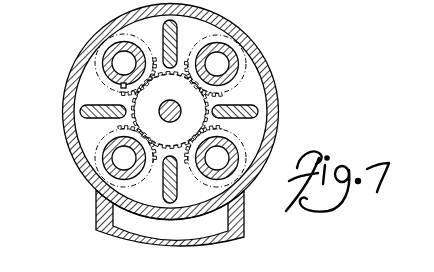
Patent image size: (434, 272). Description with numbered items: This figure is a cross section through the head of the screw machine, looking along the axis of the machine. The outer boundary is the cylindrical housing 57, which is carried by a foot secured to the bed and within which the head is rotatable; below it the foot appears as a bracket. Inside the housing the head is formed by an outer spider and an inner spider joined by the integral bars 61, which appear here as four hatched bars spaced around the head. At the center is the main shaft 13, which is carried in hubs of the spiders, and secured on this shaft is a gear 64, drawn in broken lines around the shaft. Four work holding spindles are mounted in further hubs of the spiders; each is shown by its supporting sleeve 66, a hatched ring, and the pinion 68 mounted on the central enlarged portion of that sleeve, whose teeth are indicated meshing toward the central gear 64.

The main shaft 13 is at (172, 97).
The cylindrical housing 57 is at (65, 87).
The integral bars 61 is at (83, 120).
The gear 64 is at (170, 110).
The supporting sleeve 66 is at (227, 77).
The pinion 68 is at (198, 51).